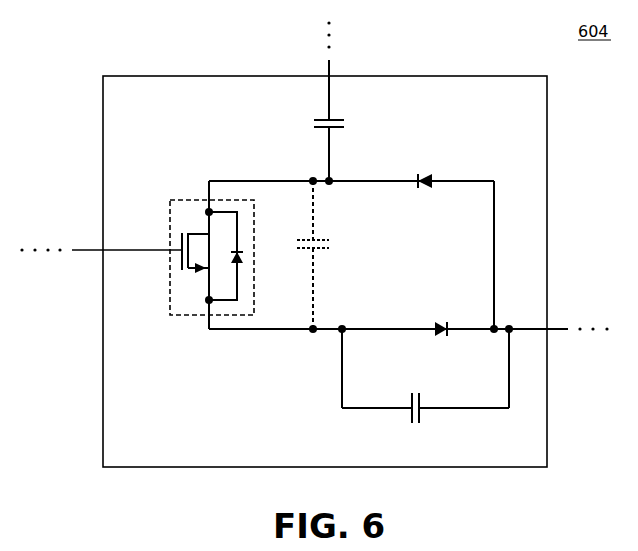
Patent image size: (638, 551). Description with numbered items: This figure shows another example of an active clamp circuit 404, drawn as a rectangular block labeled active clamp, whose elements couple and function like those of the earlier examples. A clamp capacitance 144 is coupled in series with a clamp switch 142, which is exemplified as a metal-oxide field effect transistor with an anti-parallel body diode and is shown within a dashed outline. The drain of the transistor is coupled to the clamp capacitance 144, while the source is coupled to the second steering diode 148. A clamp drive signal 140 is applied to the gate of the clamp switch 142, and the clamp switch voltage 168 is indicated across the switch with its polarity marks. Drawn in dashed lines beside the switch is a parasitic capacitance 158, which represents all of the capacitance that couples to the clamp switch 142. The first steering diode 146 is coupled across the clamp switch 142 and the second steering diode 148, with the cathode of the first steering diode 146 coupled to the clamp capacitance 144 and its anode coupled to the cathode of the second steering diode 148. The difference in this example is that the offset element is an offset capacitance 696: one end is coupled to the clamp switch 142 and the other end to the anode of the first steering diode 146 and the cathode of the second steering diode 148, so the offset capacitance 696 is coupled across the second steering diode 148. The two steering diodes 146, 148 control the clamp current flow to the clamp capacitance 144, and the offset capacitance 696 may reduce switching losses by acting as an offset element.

The active clamp circuit 404 is at (100, 124).
The clamp capacitance C1 144 is at (283, 110).
The steering diode D1 146 is at (449, 161).
The steering diode D2 148 is at (449, 297).
The capacitance CP2 158 is at (375, 246).
The clamp switch 142 is at (186, 320).
The clamp drive signal CD 140 is at (49, 265).
The clamp switch voltage VCZ 168 is at (287, 275).
The capacitance C3 696 is at (396, 435).